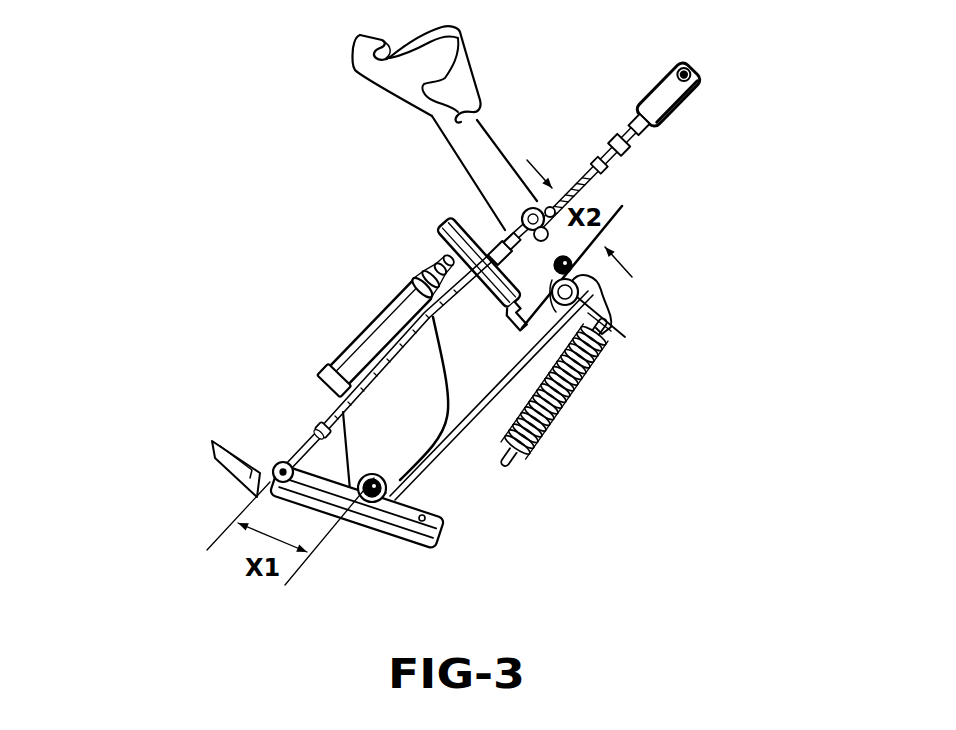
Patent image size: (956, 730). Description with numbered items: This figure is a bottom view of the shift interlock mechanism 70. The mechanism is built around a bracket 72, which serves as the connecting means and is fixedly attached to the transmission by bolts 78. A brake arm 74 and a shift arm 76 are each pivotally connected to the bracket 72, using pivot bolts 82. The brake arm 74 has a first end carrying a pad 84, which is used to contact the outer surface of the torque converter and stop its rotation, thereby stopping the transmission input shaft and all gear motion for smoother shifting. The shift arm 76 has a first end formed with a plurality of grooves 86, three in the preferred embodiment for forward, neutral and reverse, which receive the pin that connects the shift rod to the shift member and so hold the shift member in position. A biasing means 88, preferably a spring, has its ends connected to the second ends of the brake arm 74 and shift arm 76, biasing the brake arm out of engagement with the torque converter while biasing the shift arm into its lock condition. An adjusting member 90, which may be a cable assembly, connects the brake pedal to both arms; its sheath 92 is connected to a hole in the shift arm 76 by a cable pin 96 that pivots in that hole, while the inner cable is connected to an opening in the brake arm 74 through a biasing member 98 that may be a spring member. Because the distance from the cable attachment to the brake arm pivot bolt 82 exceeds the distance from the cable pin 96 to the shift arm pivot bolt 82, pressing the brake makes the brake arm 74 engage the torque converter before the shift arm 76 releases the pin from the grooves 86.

The shift interlock mechanism 70 is at (188, 137).
The bracket 72 is at (450, 433).
The brake arm 74 is at (433, 540).
The shift arm 76 is at (434, 113).
The bolts 78 is at (333, 392).
The pivot bolts 82 is at (583, 292).
The pad 84 is at (217, 442).
The grooves 86 is at (428, 62).
The biasing means 88 is at (588, 388).
The adjusting member 90 is at (724, 100).
The sheath 92 is at (598, 166).
The cable pin 96 is at (505, 210).
The biasing member 98 is at (320, 427).